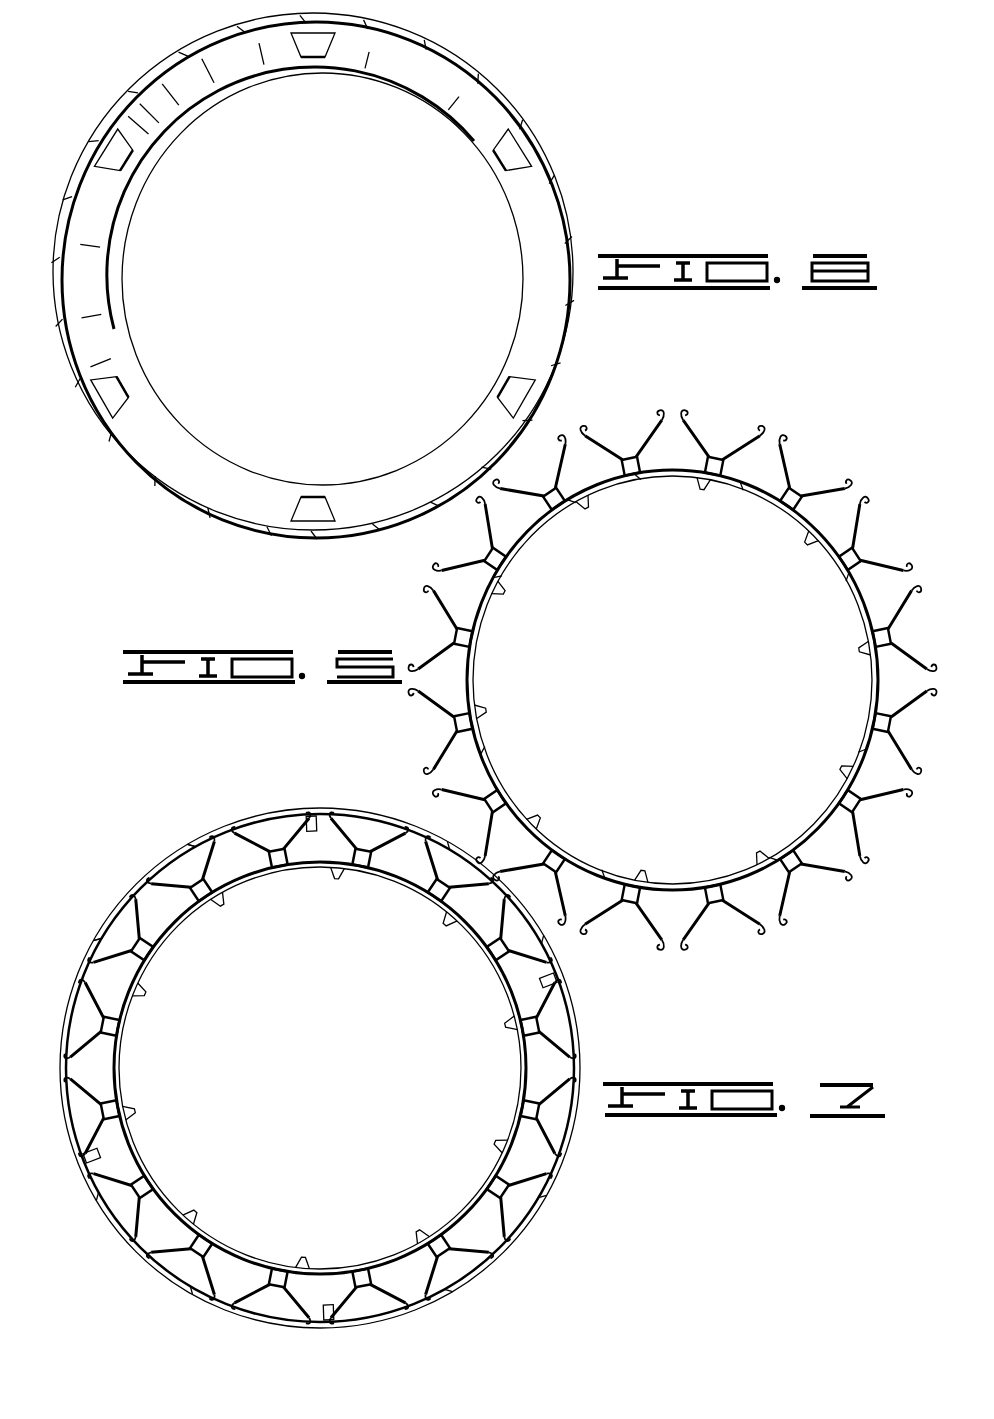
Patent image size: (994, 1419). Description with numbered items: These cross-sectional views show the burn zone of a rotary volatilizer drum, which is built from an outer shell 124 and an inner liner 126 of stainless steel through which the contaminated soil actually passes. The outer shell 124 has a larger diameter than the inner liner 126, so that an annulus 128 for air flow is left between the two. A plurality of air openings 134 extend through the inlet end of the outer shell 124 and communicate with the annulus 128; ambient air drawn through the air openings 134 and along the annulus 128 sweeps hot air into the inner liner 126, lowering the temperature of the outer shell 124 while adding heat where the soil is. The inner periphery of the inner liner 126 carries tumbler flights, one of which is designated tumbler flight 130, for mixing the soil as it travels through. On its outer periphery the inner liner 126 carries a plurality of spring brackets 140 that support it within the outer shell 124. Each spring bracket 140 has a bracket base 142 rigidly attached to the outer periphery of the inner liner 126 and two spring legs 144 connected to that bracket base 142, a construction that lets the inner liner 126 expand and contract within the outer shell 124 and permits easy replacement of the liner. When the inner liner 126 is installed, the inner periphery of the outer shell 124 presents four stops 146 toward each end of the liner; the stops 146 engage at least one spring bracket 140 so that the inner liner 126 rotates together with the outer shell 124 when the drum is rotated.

In FIG. 5, the outer shell 124 is at (452, 55).
In FIG. 7, the outer shell 124 is at (175, 848).
In FIG. 6, the inner liner 126 is at (807, 885).
In FIG. 7, the inner liner 126 is at (184, 937).
In FIG. 7, the annulus 128 is at (232, 867).
In FIG. 6, the tumbler flight 130 is at (710, 490).
In FIG. 7, the tumbler flight 130 is at (557, 1148).
In FIG. 5, the air opening 134 is at (120, 158).
In FIG. 6, the spring bracket 140 is at (696, 438).
In FIG. 7, the spring bracket 140 is at (248, 832).
In FIG. 6, the bracket base 142 is at (716, 462).
In FIG. 7, the bracket base 142 is at (282, 845).
In FIG. 6, the spring leg 144 is at (692, 432).
In FIG. 7, the spring leg 144 is at (250, 824).
In FIG. 7, the stop 146 is at (314, 836).